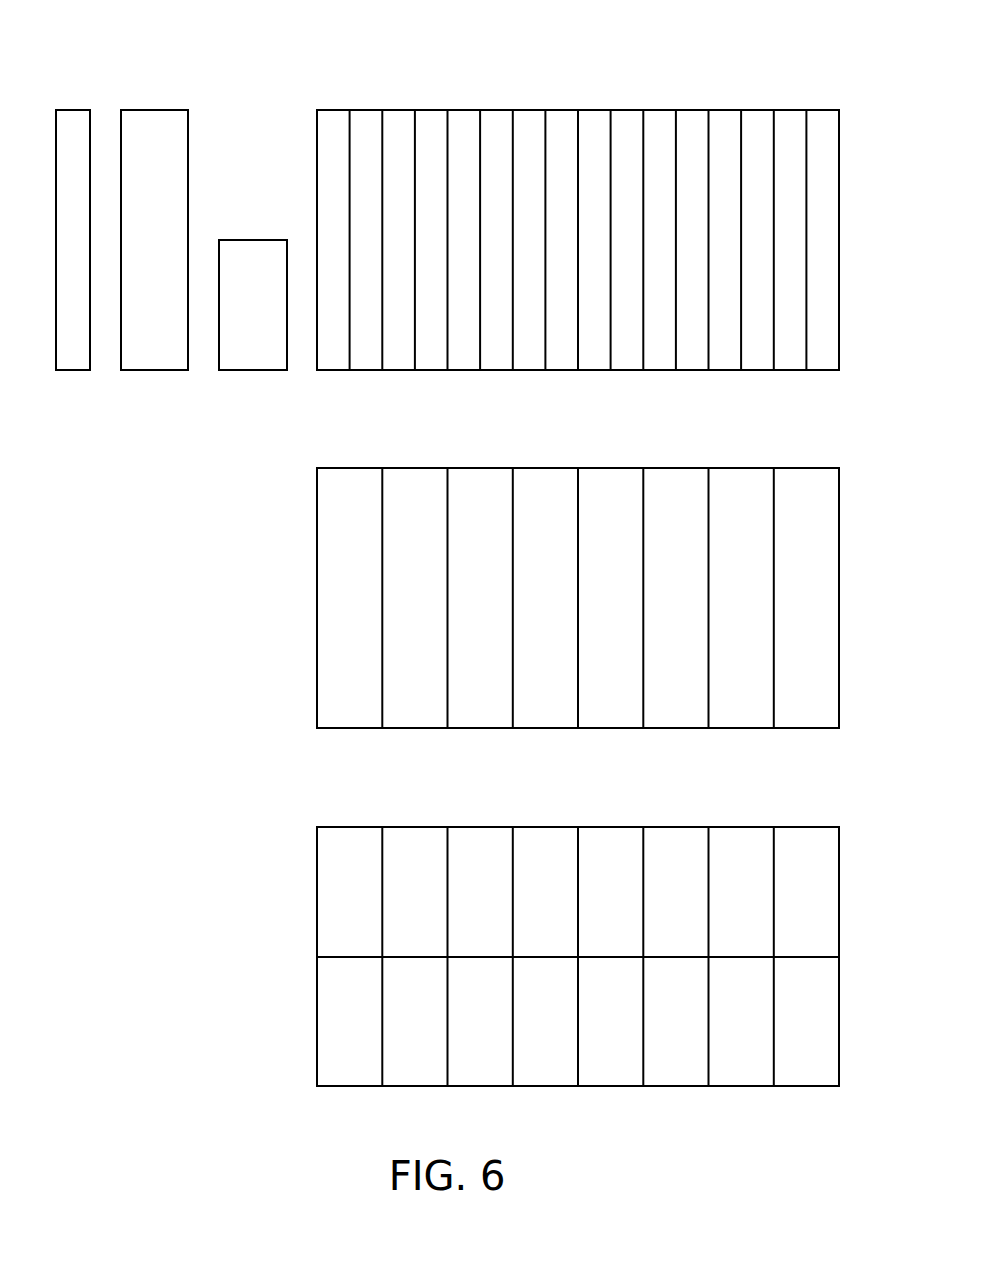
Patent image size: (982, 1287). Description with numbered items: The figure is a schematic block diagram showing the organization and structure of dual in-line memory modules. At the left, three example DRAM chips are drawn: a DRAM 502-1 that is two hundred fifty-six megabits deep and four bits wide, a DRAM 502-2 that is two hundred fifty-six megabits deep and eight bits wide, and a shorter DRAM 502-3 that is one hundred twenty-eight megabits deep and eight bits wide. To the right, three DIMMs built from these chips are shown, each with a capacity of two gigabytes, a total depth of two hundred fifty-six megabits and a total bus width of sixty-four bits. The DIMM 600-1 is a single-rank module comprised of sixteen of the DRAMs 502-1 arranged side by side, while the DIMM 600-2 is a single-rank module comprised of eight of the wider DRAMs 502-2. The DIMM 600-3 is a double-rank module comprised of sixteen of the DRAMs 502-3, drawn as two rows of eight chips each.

The DRAM 502-1 is at (70, 371).
The DRAM 502-2 is at (160, 371).
The DRAM 502-3 is at (258, 371).
The DIMM 600-1 is at (785, 110).
The DIMM 600-2 is at (785, 468).
The DIMM 600-3 is at (785, 827).